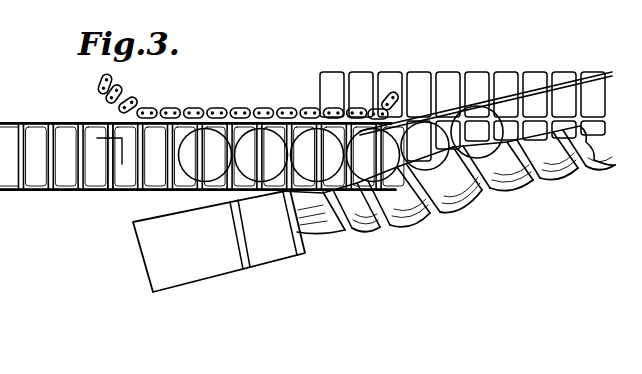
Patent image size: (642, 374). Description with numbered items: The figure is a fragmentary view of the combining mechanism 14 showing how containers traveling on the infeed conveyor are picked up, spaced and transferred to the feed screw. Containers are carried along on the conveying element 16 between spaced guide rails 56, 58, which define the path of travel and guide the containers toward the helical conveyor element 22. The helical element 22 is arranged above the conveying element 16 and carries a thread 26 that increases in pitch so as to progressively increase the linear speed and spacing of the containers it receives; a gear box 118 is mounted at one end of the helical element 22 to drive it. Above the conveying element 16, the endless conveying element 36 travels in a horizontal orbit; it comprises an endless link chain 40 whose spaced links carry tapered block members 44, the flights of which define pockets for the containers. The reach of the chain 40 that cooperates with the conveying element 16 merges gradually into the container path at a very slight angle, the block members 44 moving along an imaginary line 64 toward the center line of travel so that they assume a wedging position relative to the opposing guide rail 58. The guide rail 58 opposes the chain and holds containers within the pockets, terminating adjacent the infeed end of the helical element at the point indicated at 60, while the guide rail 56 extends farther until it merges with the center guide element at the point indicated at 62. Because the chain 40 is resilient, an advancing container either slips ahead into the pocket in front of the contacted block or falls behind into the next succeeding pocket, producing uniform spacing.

The packaging machine 14 is at (282, 2).
The conveying element 16 is at (7, 122).
The helical conveyor element 22 is at (497, 213).
The thread 26 is at (368, 225).
The endless conveying element 36 is at (138, 101).
The endless link chain 40 is at (213, 107).
The tapered block member 44 is at (155, 138).
The guide rail 56 is at (43, 122).
The guide rail 58 is at (87, 192).
The termination point of guide rail 60 is at (406, 212).
The merging point of guide rail 62 is at (400, 144).
The imaginary line 64 is at (118, 193).
The gear box 118 is at (233, 274).